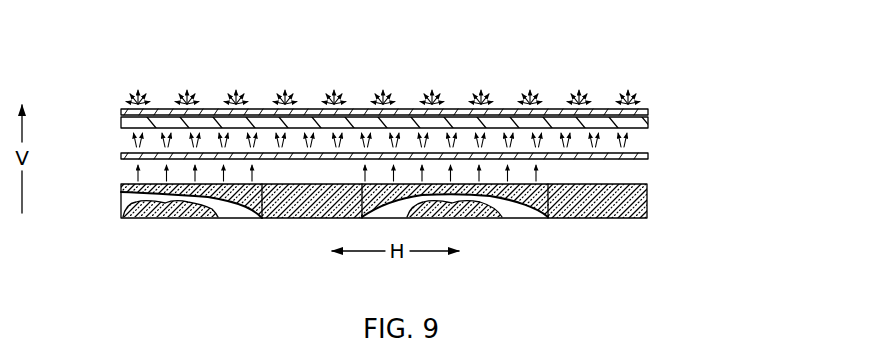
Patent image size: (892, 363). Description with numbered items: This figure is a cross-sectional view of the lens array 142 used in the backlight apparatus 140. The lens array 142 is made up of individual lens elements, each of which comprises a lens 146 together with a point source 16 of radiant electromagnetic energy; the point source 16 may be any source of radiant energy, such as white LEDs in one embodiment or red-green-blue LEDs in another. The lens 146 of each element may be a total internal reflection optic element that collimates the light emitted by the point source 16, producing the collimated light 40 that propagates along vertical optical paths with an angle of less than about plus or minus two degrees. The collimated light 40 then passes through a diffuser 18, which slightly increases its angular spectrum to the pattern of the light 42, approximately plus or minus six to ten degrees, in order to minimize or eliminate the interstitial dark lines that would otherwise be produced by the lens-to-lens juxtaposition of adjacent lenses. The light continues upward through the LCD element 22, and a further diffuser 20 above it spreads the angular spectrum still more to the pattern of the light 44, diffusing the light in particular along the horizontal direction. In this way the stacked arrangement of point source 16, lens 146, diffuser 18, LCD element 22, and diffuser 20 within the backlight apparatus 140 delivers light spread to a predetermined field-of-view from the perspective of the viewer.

The point source 16 is at (197, 218).
The diffuser 18 is at (648, 157).
The diffuser 20 is at (648, 112).
The LCD element 22 is at (648, 123).
The collimated light 40 is at (136, 177).
The light 42 is at (131, 138).
The light 44 is at (126, 97).
The backlight apparatus 140 is at (658, 64).
The lens array 142 is at (419, 66).
The lens 146 is at (121, 208).